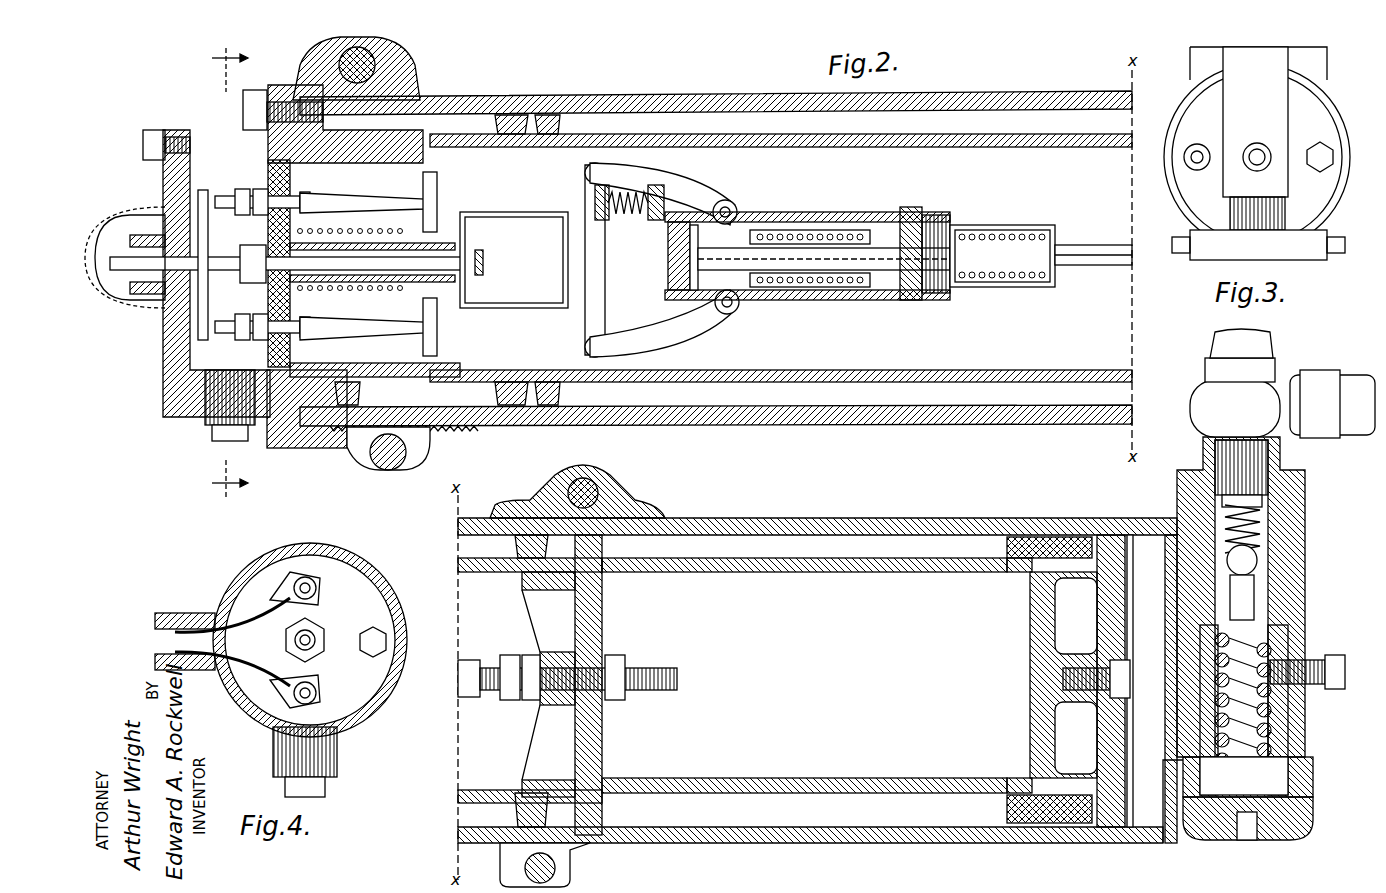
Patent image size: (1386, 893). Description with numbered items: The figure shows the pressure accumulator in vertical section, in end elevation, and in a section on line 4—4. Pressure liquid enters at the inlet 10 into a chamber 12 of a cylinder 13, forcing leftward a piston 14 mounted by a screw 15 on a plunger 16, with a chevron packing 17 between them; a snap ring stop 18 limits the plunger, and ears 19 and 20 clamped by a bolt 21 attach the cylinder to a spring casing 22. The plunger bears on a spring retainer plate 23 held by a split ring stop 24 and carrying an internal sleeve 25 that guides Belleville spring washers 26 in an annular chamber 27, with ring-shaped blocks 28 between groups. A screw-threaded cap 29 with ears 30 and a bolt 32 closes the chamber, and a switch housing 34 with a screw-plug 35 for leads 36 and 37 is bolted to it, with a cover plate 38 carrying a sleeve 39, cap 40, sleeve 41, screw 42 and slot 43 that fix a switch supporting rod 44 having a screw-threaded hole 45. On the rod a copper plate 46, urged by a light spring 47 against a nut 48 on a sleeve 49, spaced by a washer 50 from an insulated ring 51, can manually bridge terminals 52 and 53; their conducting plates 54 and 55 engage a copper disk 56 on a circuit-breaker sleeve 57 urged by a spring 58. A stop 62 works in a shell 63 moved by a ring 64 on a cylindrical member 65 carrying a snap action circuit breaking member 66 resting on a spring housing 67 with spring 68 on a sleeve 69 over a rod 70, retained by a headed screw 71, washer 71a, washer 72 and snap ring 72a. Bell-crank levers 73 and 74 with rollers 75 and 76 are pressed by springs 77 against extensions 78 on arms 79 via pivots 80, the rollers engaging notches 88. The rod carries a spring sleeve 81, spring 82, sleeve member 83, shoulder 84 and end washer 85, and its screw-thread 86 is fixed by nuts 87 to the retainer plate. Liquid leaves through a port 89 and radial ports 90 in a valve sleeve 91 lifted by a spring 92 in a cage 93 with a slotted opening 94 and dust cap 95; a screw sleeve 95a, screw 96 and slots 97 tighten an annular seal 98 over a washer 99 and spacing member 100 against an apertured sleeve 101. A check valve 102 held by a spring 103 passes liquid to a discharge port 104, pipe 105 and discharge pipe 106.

In FIG. 2, the section line 4— 4 is at (230, 269).
In FIG. 3, the inlet 10 is at (1192, 165).
In FIG. 2, the chamber 12 is at (1130, 843).
In FIG. 2, the cylinder 13 is at (808, 518).
In FIG. 2, the piston 14 is at (1110, 830).
In FIG. 2, the screw 15 is at (1063, 679).
In FIG. 2, the plunger 16 is at (885, 780).
In FIG. 2, the chevron packing 17 is at (1045, 537).
In FIG. 2, the snap ring stop 18 is at (660, 558).
In FIG. 2, the ear 19 is at (510, 872).
In FIG. 3, the ear 19 is at (1200, 258).
In FIG. 2, the ear 20 is at (522, 868).
In FIG. 2, the bolt 21 is at (575, 870).
In FIG. 3, the bolt 21 is at (1340, 255).
In FIG. 2, the spring casing 22 is at (1098, 96).
In FIG. 2, the spring retainer plate 23 is at (590, 760).
In FIG. 2, the split ring stop 24 is at (600, 518).
In FIG. 2, the internal sleeve 25 is at (1112, 142).
In FIG. 2, the Belleville spring washers 26 is at (360, 393).
In FIG. 2, the annular chamber 27 is at (1118, 104).
In FIG. 2, the ring-shaped blocks 28 is at (548, 134).
In FIG. 2, the screw-threaded cap 29 is at (348, 447).
In FIG. 2, the ear 30 is at (375, 468).
In FIG. 2, the bolt 32 is at (407, 452).
In FIG. 2, the switch housing 34 is at (292, 448).
In FIG. 2, the screw-plug 35 is at (210, 420).
In FIG. 2, the lead 36 is at (262, 420).
In FIG. 4, the lead 36 is at (250, 710).
In FIG. 2, the lead 37 is at (235, 160).
In FIG. 4, the lead 37 is at (228, 605).
In FIG. 2, the cover plate 38 is at (165, 181).
In FIG. 2, the sleeve 39 is at (165, 238).
In FIG. 2, the screw-threaded cap 40 is at (112, 295).
In FIG. 2, the sleeve 41 is at (110, 336).
In FIG. 2, the screw 42 is at (150, 330).
In FIG. 2, the slot 43 is at (160, 300).
In FIG. 2, the adjustable switch supporting rod 44 is at (295, 263).
In FIG. 4, the adjustable switch supporting rod 44 is at (315, 640).
In FIG. 2, the screw-threaded hole 45 is at (105, 225).
In FIG. 2, the copper plate 46 is at (198, 300).
In FIG. 2, the light spring 47 is at (238, 250).
In FIG. 2, the nut 48 is at (245, 282).
In FIG. 2, the sleeve 49 is at (355, 243).
In FIG. 2, the washer 50 is at (308, 243).
In FIG. 2, the insulated ring 51 is at (296, 357).
In FIG. 2, the rod-shaped terminal 52 is at (235, 200).
In FIG. 4, the rod-shaped terminal 52 is at (318, 596).
In FIG. 2, the rod-shaped terminal 53 is at (235, 335).
In FIG. 4, the rod-shaped terminal 53 is at (318, 688).
In FIG. 2, the conducting plate 54 is at (437, 192).
In FIG. 2, the conducting plate 55 is at (437, 332).
In FIG. 2, the copper disk 56 is at (408, 284).
In FIG. 2, the circuit-breaker sleeve 57 is at (470, 246).
In FIG. 2, the spring 58 is at (365, 284).
In FIG. 2, the stop 62 is at (486, 260).
In FIG. 2, the shell 63 is at (500, 306).
In FIG. 2, the ring 64 is at (705, 208).
In FIG. 2, the cylindrical member 65 is at (560, 310).
In FIG. 2, the snap action circuit breaking member 66 is at (912, 300).
In FIG. 2, the spring housing 67 is at (872, 300).
In FIG. 2, the spring 68 is at (870, 232).
In FIG. 2, the sleeve 69 is at (860, 222).
In FIG. 2, the rod 70 is at (992, 208).
In FIG. 2, the headed screw 71 is at (692, 262).
In FIG. 2, the washer 71a is at (670, 300).
In FIG. 2, the washer 72 is at (700, 320).
In FIG. 2, the snap ring 72a is at (818, 222).
In FIG. 2, the bell-crank lever 73 is at (600, 165).
In FIG. 2, the bell-crank lever 74 is at (678, 335).
In FIG. 2, the roller 75 is at (740, 214).
In FIG. 2, the roller 76 is at (740, 306).
In FIG. 2, the spring 77 is at (615, 195).
In FIG. 2, the extension 78 is at (608, 203).
In FIG. 2, the arm 79 is at (585, 155).
In FIG. 2, the pivot 80 is at (655, 185).
In FIG. 2, the spring sleeve 81 is at (975, 290).
In FIG. 2, the spring 82 is at (1040, 228).
In FIG. 2, the sleeve member 83 is at (1020, 287).
In FIG. 2, the shoulder 84 is at (1062, 272).
In FIG. 2, the end washer 85 is at (1058, 246).
In FIG. 2, the screw-thread 86 is at (490, 668).
In FIG. 2, the nuts 87 is at (530, 655).
In FIG. 2, the notches 88 is at (668, 245).
In FIG. 2, the port 89 is at (1135, 560).
In FIG. 2, the radial ports 90 is at (1262, 578).
In FIG. 2, the valve sleeve 91 is at (1242, 598).
In FIG. 2, the spring 92 is at (1290, 800).
In FIG. 2, the cage 93 is at (1290, 728).
In FIG. 2, the slotted opening 94 is at (1215, 810).
In FIG. 2, the dust cap 95 is at (1295, 835).
In FIG. 3, the dust cap 95 is at (1285, 215).
In FIG. 2, the screw sleeve 95a is at (1120, 655).
In FIG. 2, the screw 96 is at (1338, 660).
In FIG. 3, the screw 96 is at (1265, 157).
In FIG. 2, the slots 97 is at (1205, 676).
In FIG. 2, the annular seal 98 is at (1268, 612).
In FIG. 2, the washer 99 is at (1178, 626).
In FIG. 2, the spacing member 100 is at (1250, 590).
In FIG. 2, the apertured sleeve 101 is at (1262, 535).
In FIG. 2, the check valve 102 is at (1257, 556).
In FIG. 2, the spring 103 is at (1210, 470).
In FIG. 2, the discharge port 104 is at (1262, 500).
In FIG. 2, the pipe 105 is at (1355, 436).
In FIG. 2, the discharge pipe 106 is at (1262, 346).